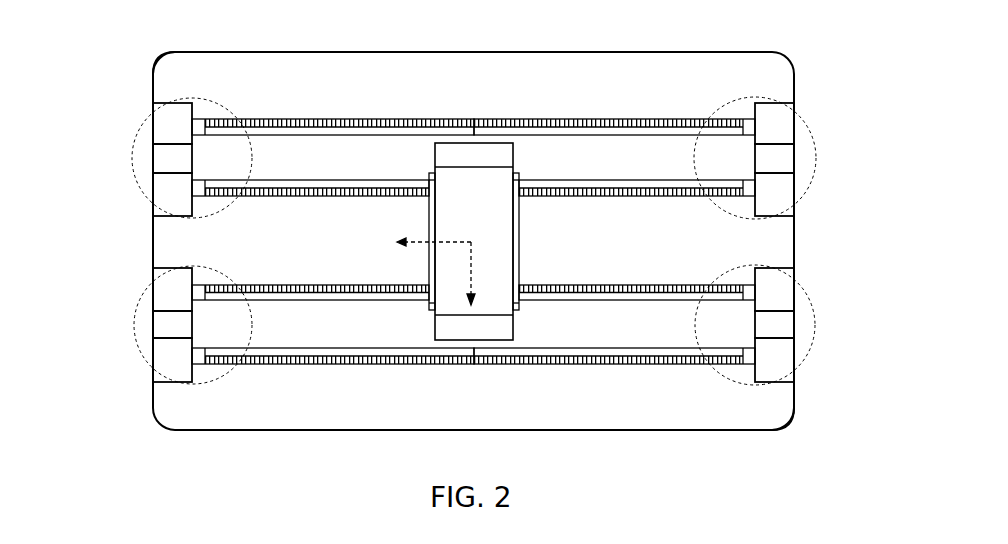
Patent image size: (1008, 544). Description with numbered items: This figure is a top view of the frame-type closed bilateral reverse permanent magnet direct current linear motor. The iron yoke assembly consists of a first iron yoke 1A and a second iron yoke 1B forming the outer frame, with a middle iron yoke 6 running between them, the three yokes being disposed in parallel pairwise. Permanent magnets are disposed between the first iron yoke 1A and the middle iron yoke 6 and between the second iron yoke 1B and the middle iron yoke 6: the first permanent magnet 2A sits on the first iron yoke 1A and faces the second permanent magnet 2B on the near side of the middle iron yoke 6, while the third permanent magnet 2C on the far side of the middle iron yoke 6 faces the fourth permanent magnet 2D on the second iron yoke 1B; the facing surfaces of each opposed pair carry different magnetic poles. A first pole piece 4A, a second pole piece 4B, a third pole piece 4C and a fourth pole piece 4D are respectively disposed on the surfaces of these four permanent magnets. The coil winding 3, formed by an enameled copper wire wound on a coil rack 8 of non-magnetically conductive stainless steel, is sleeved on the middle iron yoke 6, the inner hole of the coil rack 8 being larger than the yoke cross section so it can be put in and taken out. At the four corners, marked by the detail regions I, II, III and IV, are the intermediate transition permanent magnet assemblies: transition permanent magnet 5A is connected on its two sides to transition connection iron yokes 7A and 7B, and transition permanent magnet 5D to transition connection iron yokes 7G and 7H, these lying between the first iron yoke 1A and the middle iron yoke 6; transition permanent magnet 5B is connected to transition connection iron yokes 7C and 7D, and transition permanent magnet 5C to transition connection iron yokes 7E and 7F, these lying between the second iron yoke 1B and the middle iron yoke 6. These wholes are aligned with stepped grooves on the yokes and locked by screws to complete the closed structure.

The first iron yoke 1A is at (245, 88).
The second iron yoke 1B is at (773, 417).
The first permanent magnet 2A is at (305, 124).
The second permanent magnet 2B is at (330, 190).
The third permanent magnet 2C is at (348, 292).
The fourth permanent magnet 2D is at (370, 358).
The coil winding 3 is at (476, 227).
The first pole piece 4A is at (578, 133).
The second pole piece 4B is at (604, 185).
The third pole piece 4C is at (615, 291).
The fourth pole piece 4D is at (637, 352).
The transition permanent magnet 5A is at (782, 158).
The transition permanent magnet 5B is at (776, 322).
The transition permanent magnet 5C is at (163, 325).
The transition permanent magnet 5D is at (164, 157).
The middle iron yoke 6 is at (773, 239).
The transition connection iron yoke 7A is at (782, 119).
The transition connection iron yoke 7B is at (782, 196).
The transition connection iron yoke 7C is at (777, 291).
The transition connection iron yoke 7D is at (779, 366).
The transition connection iron yoke 7E is at (161, 363).
The transition connection iron yoke 7F is at (165, 287).
The transition connection iron yoke 7G is at (164, 196).
The transition connection iron yoke 7H is at (165, 120).
The coil rack 8 is at (516, 250).
The detail region I is at (138, 182).
The detail region II is at (778, 98).
The detail region III is at (143, 352).
The detail region IV is at (853, 353).